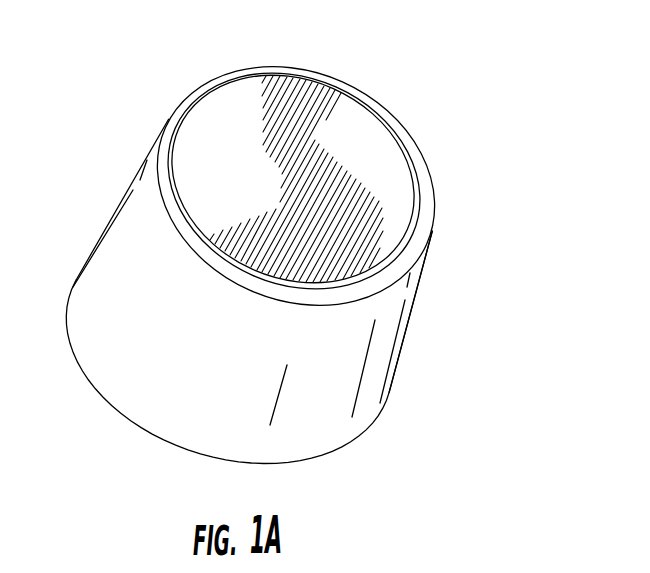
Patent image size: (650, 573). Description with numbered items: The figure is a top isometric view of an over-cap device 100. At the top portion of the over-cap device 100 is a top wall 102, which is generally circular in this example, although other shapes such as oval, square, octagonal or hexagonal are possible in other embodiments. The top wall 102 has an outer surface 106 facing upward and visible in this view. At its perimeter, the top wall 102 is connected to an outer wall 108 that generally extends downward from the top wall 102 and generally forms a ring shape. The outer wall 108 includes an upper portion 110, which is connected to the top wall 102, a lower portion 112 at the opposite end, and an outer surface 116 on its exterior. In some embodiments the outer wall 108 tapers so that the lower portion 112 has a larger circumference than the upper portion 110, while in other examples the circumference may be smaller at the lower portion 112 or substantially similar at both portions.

The over-cap device 100 is at (302, 233).
The top wall 102 is at (230, 97).
The outer surface 106 is at (337, 137).
The outer wall 108 is at (279, 291).
The upper portion 110 is at (190, 92).
The lower portion 112 is at (118, 405).
The outer surface 116 is at (410, 303).